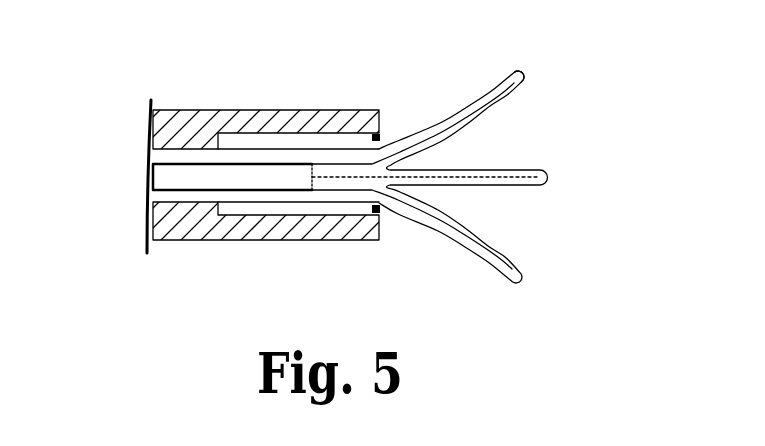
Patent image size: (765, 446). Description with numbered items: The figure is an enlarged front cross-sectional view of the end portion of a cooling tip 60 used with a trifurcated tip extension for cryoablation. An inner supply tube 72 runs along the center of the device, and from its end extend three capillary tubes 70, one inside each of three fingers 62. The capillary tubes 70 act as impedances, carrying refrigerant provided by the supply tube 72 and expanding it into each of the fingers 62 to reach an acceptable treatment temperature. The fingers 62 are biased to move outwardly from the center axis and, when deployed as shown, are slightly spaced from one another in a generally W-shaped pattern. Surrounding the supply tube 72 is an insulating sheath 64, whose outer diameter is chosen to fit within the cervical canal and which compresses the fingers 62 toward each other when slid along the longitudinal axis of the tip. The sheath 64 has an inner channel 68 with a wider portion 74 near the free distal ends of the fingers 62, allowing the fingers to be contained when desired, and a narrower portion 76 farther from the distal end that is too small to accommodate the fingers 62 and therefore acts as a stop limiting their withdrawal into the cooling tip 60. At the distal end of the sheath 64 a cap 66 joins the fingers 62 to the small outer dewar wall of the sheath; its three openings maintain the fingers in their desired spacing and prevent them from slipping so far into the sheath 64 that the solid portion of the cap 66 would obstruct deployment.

The cooling tip 60 is at (426, 58).
The fingers 62 is at (522, 69).
The insulating sheath 64 is at (185, 118).
The cap 66 is at (382, 212).
The inner channel 68 is at (297, 143).
The capillary tube 70 is at (490, 93).
The inner supply tube 72 is at (225, 163).
The wider portion 74 is at (305, 208).
The narrower portion 76 is at (148, 118).